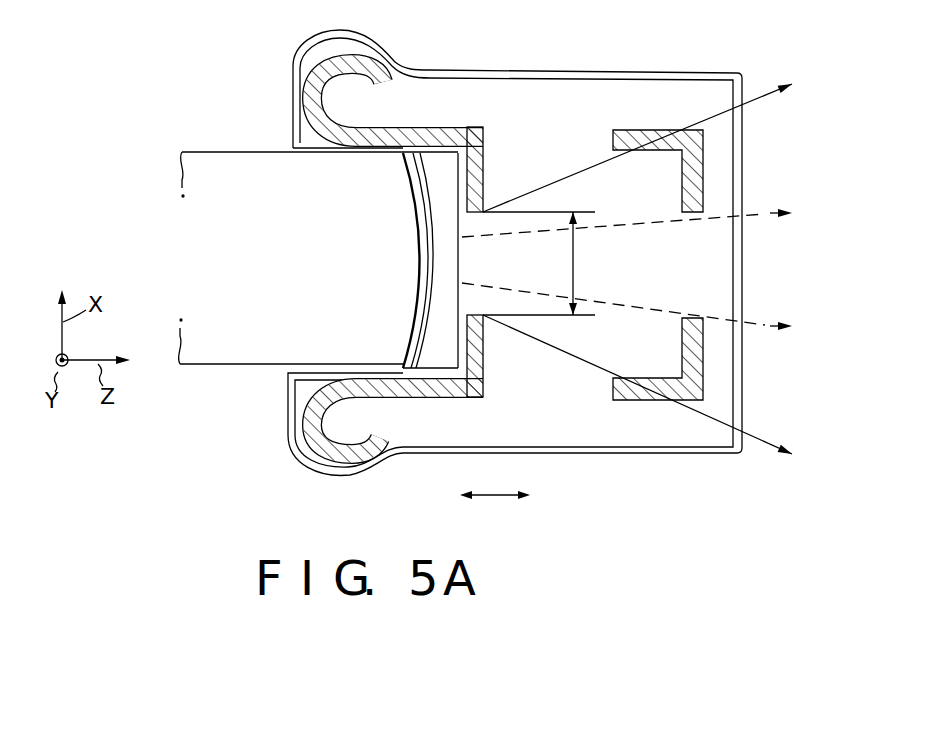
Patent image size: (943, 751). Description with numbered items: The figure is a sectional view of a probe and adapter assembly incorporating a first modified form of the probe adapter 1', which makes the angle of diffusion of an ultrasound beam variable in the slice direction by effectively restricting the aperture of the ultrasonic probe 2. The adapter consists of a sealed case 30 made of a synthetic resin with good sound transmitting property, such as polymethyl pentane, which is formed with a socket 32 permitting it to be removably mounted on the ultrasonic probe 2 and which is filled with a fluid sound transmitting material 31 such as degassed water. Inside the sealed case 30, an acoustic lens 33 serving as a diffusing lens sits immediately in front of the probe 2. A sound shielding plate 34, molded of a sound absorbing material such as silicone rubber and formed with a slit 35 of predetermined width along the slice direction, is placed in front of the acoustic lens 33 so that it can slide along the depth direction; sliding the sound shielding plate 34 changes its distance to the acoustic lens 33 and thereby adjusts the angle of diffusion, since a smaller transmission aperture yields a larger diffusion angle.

The ultrasonic probe 2 is at (213, 366).
The sealed case 30 is at (713, 457).
The fluid sound transmitting material 31 is at (637, 433).
The socket 32 is at (292, 150).
The acoustic lens 33 is at (444, 165).
The sound shielding plate 34 is at (490, 142).
The slit 35 is at (490, 261).
The probe adapter 1' is at (540, 485).